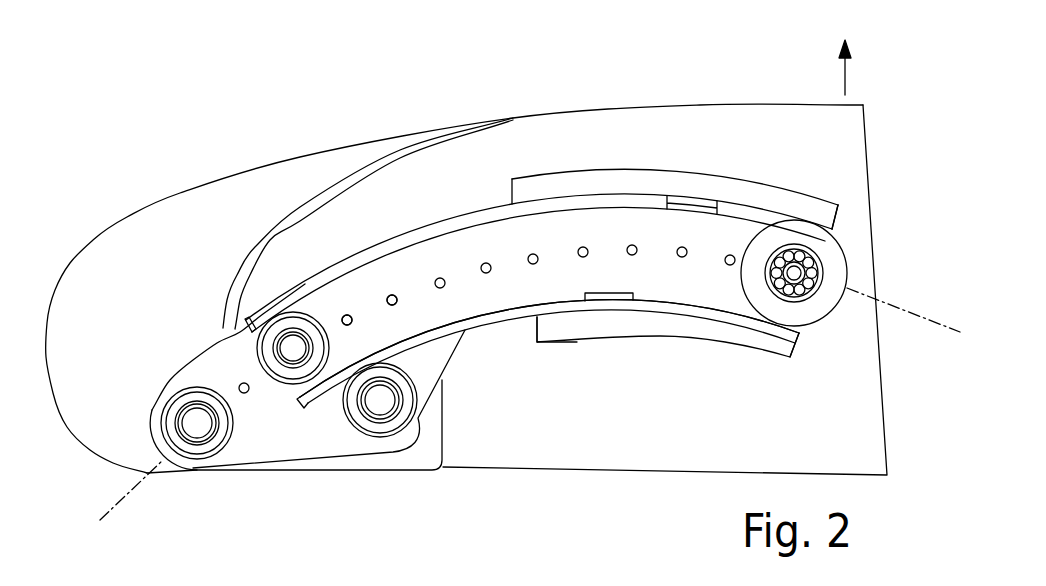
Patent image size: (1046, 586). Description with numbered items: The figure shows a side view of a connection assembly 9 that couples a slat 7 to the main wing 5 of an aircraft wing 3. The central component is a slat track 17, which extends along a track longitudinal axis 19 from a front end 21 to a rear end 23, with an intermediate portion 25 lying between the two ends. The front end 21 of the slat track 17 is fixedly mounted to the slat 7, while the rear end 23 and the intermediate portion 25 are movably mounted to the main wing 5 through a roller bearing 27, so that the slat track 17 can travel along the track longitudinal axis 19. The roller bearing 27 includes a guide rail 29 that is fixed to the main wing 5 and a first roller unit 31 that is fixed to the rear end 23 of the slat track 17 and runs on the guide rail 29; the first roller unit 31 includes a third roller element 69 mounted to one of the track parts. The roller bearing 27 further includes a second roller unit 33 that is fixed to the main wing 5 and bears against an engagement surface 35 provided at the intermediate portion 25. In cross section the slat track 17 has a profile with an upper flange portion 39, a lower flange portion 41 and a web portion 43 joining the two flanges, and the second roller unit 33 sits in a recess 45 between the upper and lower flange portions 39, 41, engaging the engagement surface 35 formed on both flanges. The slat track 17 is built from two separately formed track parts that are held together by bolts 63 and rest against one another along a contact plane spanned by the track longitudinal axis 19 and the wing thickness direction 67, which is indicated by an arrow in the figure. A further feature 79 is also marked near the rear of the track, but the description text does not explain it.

The wing 3 is at (454, 283).
The main wing 5 is at (735, 412).
The slat 7 is at (104, 337).
The connection assembly 9 is at (541, 140).
The slat track 17 is at (538, 250).
The track longitudinal axis 19 is at (943, 334).
The front end 21 is at (301, 441).
The rear end 23 is at (764, 222).
The intermediate portion 25 is at (510, 293).
The roller bearing 27 is at (544, 249).
The guide rail 29 is at (722, 178).
The first roller unit 31 is at (820, 305).
The second roller unit 33 is at (297, 330).
The engagement surface 35 is at (500, 210).
The upper flange portion 39 is at (398, 240).
The lower flange portion 41 is at (577, 300).
The web portion 43 is at (552, 278).
The recess 45 is at (601, 270).
The bolts 63 is at (345, 315).
The wing thickness direction 67 is at (847, 68).
The third roller element 69 is at (842, 258).
The stop 79 is at (804, 346).